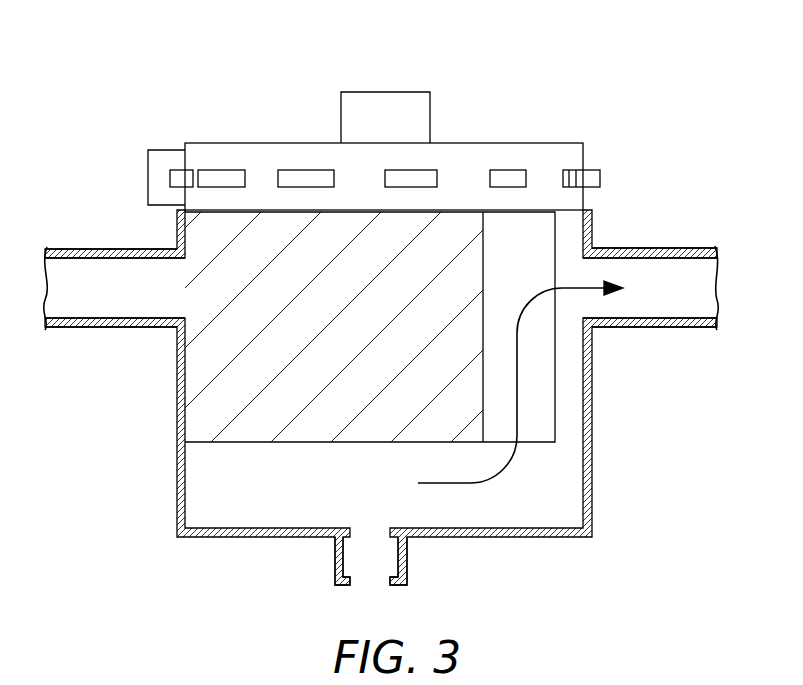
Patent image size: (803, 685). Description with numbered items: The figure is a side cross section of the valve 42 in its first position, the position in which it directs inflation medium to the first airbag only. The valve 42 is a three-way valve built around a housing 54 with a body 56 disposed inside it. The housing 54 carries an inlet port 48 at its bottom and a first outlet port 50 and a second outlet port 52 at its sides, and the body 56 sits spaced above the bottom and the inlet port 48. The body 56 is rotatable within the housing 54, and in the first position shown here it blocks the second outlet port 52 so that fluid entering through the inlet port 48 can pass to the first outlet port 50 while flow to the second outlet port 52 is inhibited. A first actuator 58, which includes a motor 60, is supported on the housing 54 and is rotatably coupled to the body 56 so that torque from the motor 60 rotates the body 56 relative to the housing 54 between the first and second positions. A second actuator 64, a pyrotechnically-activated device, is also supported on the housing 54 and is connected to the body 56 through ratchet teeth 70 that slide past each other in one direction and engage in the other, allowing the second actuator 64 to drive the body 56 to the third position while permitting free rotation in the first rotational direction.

The valve 42 is at (675, 114).
The inlet port 48 is at (407, 565).
The first outlet port 50 is at (122, 330).
The second outlet port 52 is at (640, 328).
The housing 54 is at (592, 482).
The body 56 is at (218, 240).
The first actuator 58 is at (457, 93).
The motor 60 is at (355, 92).
The second actuator 64 is at (131, 166).
The ratchet teeth 70 is at (508, 170).